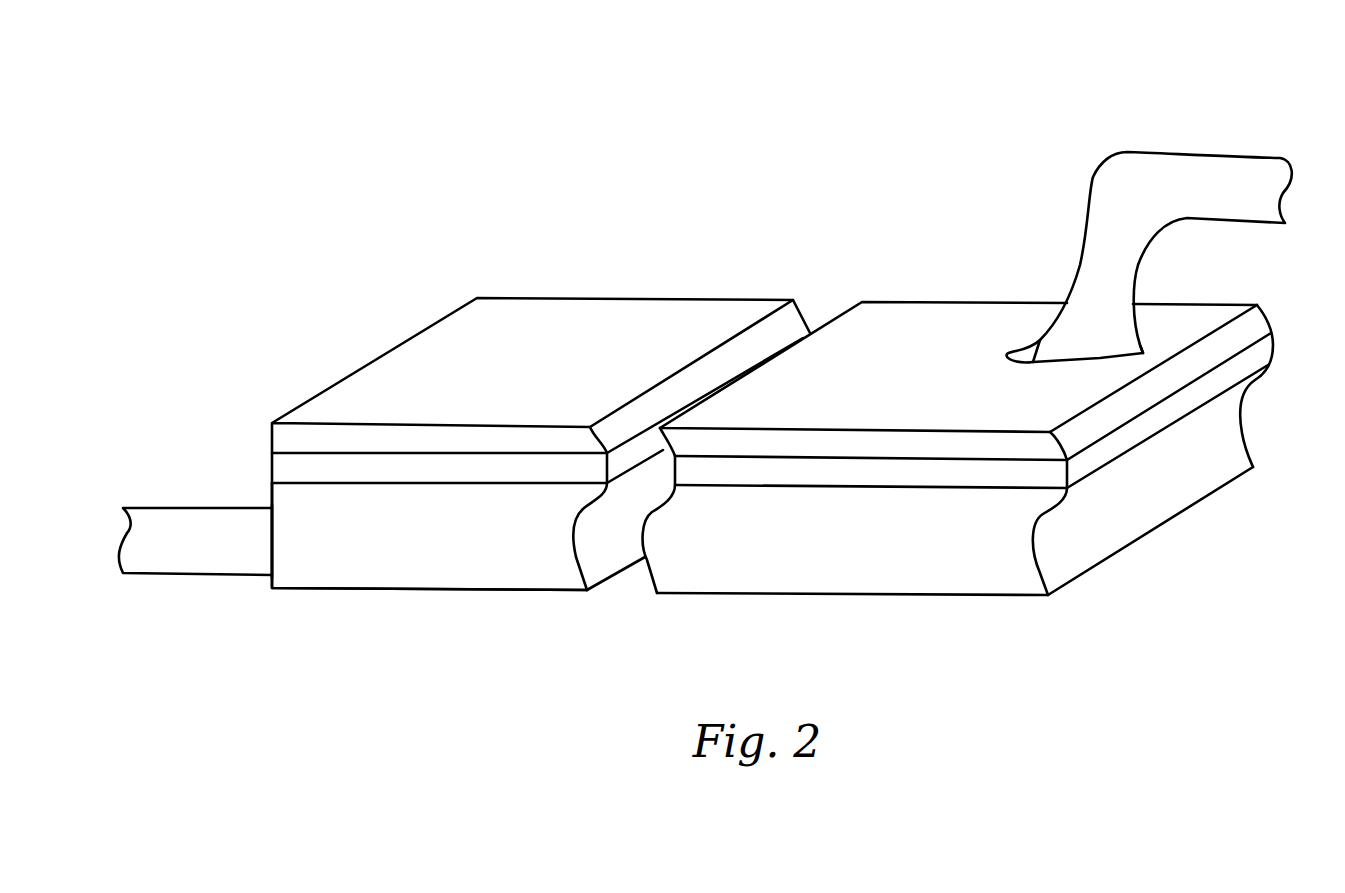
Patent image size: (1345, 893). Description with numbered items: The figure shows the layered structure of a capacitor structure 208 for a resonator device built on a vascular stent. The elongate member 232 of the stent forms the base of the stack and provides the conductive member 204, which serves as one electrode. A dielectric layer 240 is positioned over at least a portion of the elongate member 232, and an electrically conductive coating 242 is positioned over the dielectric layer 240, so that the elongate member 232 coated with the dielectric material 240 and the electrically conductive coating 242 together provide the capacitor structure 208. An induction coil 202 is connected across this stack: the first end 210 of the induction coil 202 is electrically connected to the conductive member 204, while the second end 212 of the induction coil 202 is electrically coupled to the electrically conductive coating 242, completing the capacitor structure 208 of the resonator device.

The induction coil 202 is at (1190, 127).
The conductive member 204 is at (451, 586).
The capacitor structure 208 is at (367, 293).
The first end of the induction coil 210 is at (262, 587).
The second end of the induction coil 212 is at (1047, 280).
The elongate member 232 is at (650, 268).
The dielectric layer 240 is at (272, 467).
The electrically conductive coating 242 is at (272, 440).